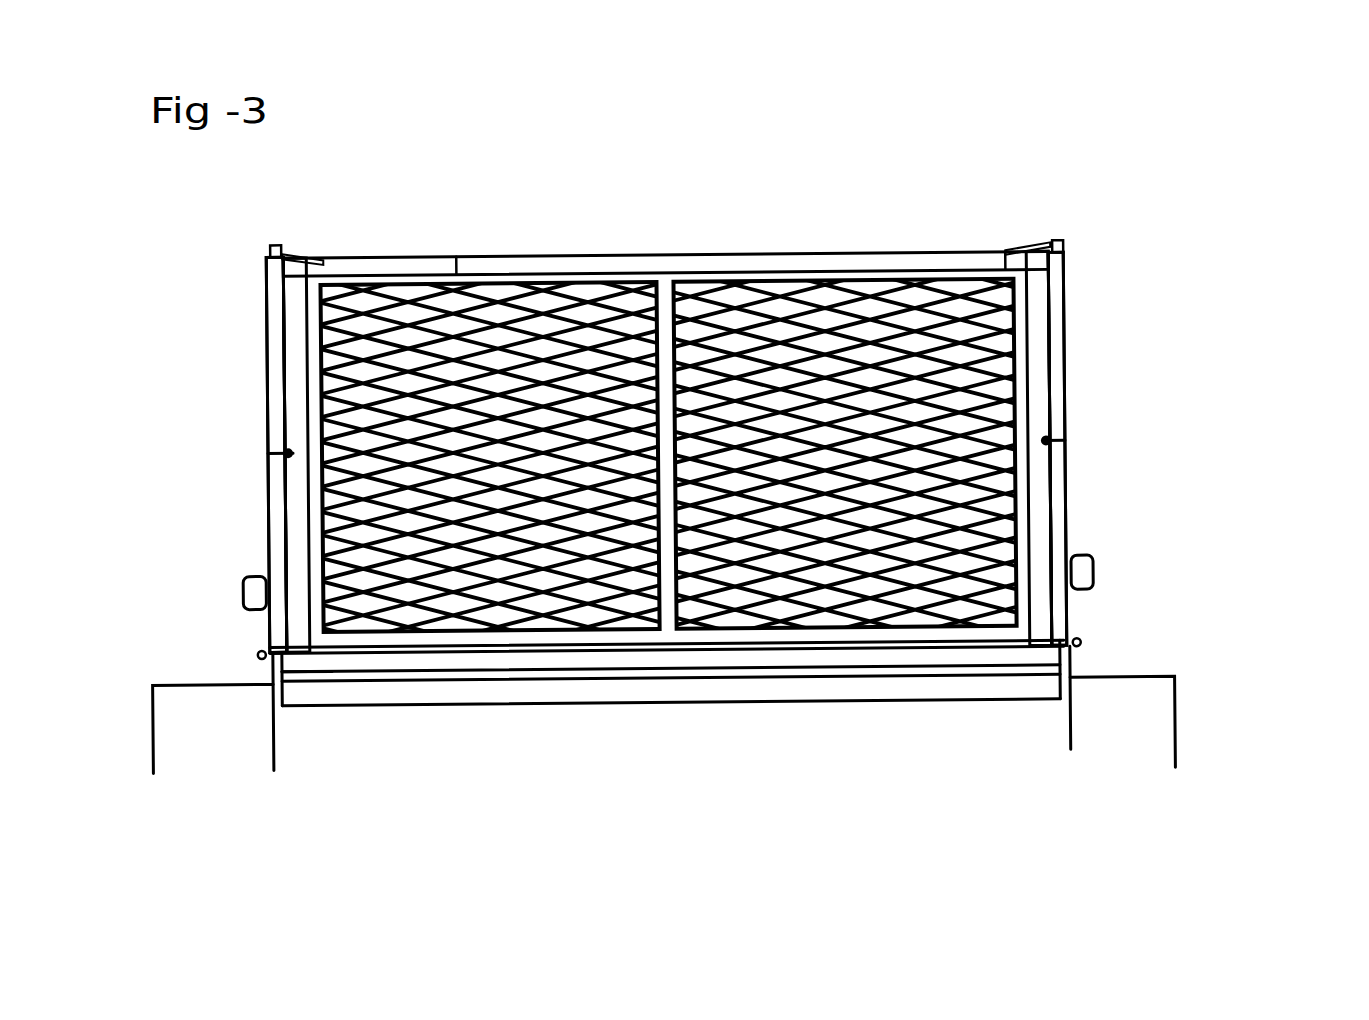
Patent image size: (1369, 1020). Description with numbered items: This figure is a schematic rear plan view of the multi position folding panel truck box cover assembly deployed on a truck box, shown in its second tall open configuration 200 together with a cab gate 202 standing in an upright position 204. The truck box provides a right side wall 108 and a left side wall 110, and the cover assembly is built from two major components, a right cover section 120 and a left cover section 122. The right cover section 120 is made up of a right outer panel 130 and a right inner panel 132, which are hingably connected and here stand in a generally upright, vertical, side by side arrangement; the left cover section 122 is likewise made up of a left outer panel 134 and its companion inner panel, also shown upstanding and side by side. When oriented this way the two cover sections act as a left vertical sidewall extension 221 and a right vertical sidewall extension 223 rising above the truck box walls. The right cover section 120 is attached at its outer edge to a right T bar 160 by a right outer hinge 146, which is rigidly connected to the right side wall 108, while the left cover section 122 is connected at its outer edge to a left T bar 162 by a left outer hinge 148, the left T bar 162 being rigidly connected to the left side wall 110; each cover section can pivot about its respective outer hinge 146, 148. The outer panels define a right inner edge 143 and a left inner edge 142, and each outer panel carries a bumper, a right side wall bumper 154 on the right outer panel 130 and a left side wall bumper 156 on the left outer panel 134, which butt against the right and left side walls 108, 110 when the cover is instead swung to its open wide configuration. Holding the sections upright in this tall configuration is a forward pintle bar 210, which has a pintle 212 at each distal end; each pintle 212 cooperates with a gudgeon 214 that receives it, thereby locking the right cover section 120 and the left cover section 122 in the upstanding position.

The second tall open configuration 200 is at (1045, 185).
The upright position 204 is at (680, 205).
The cab gate 202 is at (730, 325).
The forward pintle bar 210 is at (360, 265).
The pintle 212 is at (284, 248).
The gudgeon 214 is at (1060, 290).
The right cover section 120 is at (1222, 405).
The left cover section 122 is at (165, 455).
The right outer panel 130 is at (275, 315).
The right inner panel 132 is at (1065, 360).
The left outer panel 134 is at (270, 510).
The left inner edge 142 is at (268, 258).
The right inner edge 143 is at (1057, 245).
The left vertical sidewall extension 221 is at (280, 385).
The right vertical sidewall extension 223 is at (1065, 405).
The right side wall bumper 154 is at (1093, 590).
The left side wall bumper 156 is at (243, 590).
The right outer hinge 146 is at (1081, 641).
The left outer hinge 148 is at (259, 651).
The right T bar 160 is at (1060, 677).
The left T bar 162 is at (292, 683).
The right side wall 108 is at (1160, 725).
The left side wall 110 is at (182, 730).